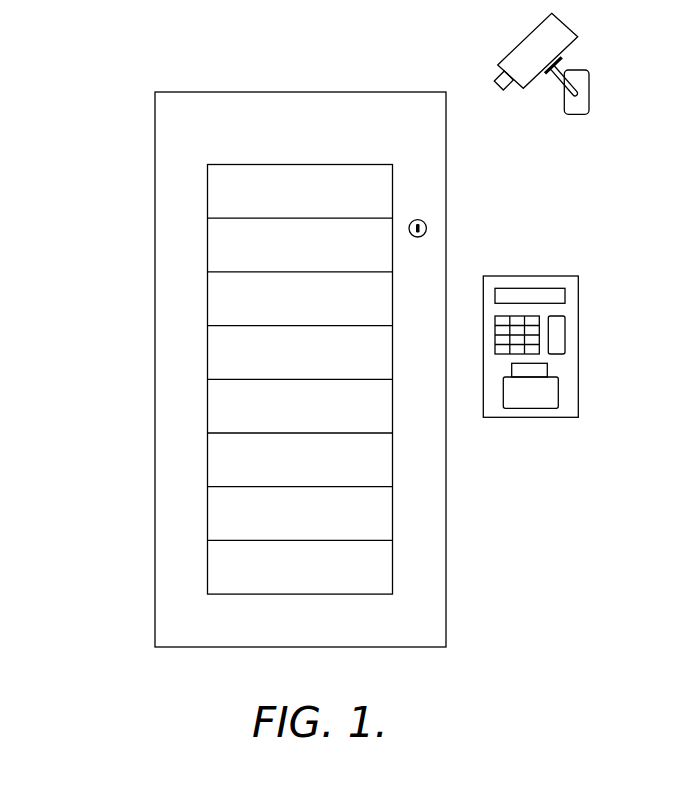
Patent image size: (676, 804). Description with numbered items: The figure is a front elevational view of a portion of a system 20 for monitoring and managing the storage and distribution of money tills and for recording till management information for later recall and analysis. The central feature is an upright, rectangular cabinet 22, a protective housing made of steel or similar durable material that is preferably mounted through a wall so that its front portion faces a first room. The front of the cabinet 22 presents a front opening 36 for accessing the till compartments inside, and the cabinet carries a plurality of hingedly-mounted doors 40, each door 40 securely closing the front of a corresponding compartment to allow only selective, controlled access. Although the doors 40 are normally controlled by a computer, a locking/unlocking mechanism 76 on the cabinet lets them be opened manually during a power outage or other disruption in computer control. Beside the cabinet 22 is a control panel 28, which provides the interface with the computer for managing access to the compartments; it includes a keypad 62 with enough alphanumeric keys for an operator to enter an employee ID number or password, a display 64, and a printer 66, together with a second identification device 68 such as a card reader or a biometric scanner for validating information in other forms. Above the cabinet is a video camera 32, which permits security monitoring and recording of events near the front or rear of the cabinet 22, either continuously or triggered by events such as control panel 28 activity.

The system 20 is at (155, 79).
The cabinet 22 is at (146, 319).
The control panel 28 is at (598, 299).
The video camera 32 is at (598, 40).
The front opening 36 is at (323, 604).
The doors 40 is at (331, 190).
The keypad 62 is at (503, 339).
The display 64 is at (528, 295).
The printer 66 is at (531, 398).
The second identification device 68 is at (555, 341).
The locking/unlocking mechanism 76 is at (427, 226).